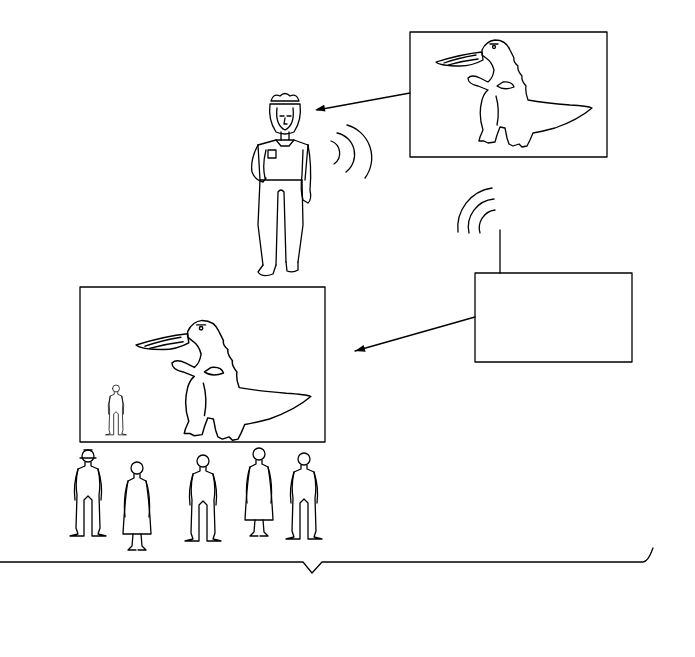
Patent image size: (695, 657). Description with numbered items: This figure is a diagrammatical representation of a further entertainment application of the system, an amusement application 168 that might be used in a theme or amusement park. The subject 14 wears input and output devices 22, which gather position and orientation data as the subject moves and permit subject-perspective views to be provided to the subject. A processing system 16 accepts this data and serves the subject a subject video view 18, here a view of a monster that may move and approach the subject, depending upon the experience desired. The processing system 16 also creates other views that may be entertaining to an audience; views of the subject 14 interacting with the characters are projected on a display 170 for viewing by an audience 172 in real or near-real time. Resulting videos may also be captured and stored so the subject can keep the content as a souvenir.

The amusement application 168 is at (108, 116).
The subject video view 18 is at (507, 32).
The subject 14 is at (267, 232).
The input and output devices 22 is at (270, 103).
The processing system 16 is at (553, 362).
The display 170 is at (80, 366).
The audience 172 is at (310, 518).